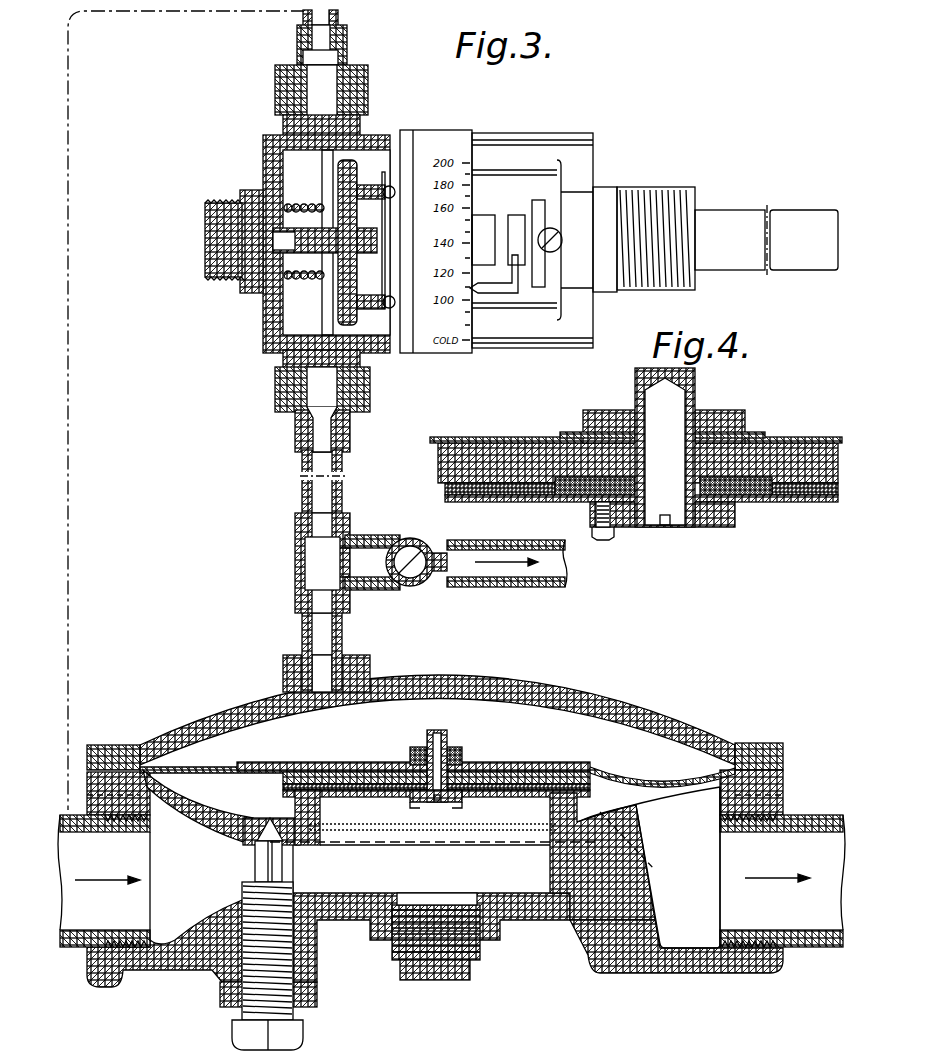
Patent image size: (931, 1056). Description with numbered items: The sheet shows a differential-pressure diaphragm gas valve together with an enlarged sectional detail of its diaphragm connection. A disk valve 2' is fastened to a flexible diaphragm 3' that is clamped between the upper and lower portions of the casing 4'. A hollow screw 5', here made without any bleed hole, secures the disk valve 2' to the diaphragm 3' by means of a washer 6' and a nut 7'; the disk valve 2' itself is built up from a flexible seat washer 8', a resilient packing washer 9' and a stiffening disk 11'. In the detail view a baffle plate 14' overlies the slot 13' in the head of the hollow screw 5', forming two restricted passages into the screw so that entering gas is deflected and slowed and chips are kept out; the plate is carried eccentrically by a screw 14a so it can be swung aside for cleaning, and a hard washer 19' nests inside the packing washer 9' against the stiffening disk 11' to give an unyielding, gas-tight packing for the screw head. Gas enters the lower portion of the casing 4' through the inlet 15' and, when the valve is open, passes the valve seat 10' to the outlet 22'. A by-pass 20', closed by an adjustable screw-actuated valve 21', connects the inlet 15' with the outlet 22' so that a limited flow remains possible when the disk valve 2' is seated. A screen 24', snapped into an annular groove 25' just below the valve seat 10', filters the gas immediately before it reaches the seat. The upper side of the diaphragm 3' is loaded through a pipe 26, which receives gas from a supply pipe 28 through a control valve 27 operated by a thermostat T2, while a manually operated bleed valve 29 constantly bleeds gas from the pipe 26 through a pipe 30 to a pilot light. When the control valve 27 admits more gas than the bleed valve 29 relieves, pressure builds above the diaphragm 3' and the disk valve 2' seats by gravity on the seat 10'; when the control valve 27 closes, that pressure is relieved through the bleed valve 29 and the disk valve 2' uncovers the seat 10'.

In FIG. 3, the pipe 28 is at (340, 14).
In FIG. 3, the control valve 27 is at (265, 307).
In FIG. 3, the thermostat T2 is at (577, 162).
In FIG. 3, the pipe 26 is at (328, 483).
In FIG. 3, the manually operated bleed valve 29 is at (410, 583).
In FIG. 3, the pipe 30 is at (537, 573).
In FIG. 3, the casing 4' is at (437, 720).
In FIG. 3, the hollow screw 5' is at (458, 751).
In FIG. 4, the hollow screw 5' is at (680, 445).
In FIG. 3, the nut 7' is at (452, 742).
In FIG. 4, the nut 7' is at (659, 411).
In FIG. 3, the washer 6' is at (481, 747).
In FIG. 4, the washer 6' is at (743, 417).
In FIG. 3, the disk valve 2' is at (413, 751).
In FIG. 4, the disk valve 2' is at (638, 444).
In FIG. 3, the flexible diaphragm 3' is at (437, 761).
In FIG. 4, the flexible diaphragm 3' is at (636, 426).
In FIG. 3, the resilient packing washer 9' is at (449, 760).
In FIG. 4, the resilient packing washer 9' is at (500, 507).
In FIG. 3, the stiffening disk 11' is at (436, 757).
In FIG. 4, the stiffening disk 11' is at (623, 491).
In FIG. 3, the flexible seat washer 8' is at (451, 802).
In FIG. 4, the flexible seat washer 8' is at (646, 504).
In FIG. 3, the valve seat 10' is at (334, 817).
In FIG. 3, the baffle plate 14' is at (458, 807).
In FIG. 4, the baffle plate 14' is at (664, 535).
In FIG. 3, the slot 13' is at (435, 832).
In FIG. 4, the slot 13' is at (673, 547).
In FIG. 4, the screw 14a is at (603, 539).
In FIG. 4, the hard washer 19' is at (797, 512).
In FIG. 3, the by-pass 20' is at (221, 807).
In FIG. 3, the screw-actuated valve 21' is at (260, 934).
In FIG. 3, the inlet 15' is at (104, 881).
In FIG. 3, the outlet 22' is at (782, 867).
In FIG. 3, the screen 24' is at (435, 852).
In FIG. 3, the annular groove 25' is at (433, 813).